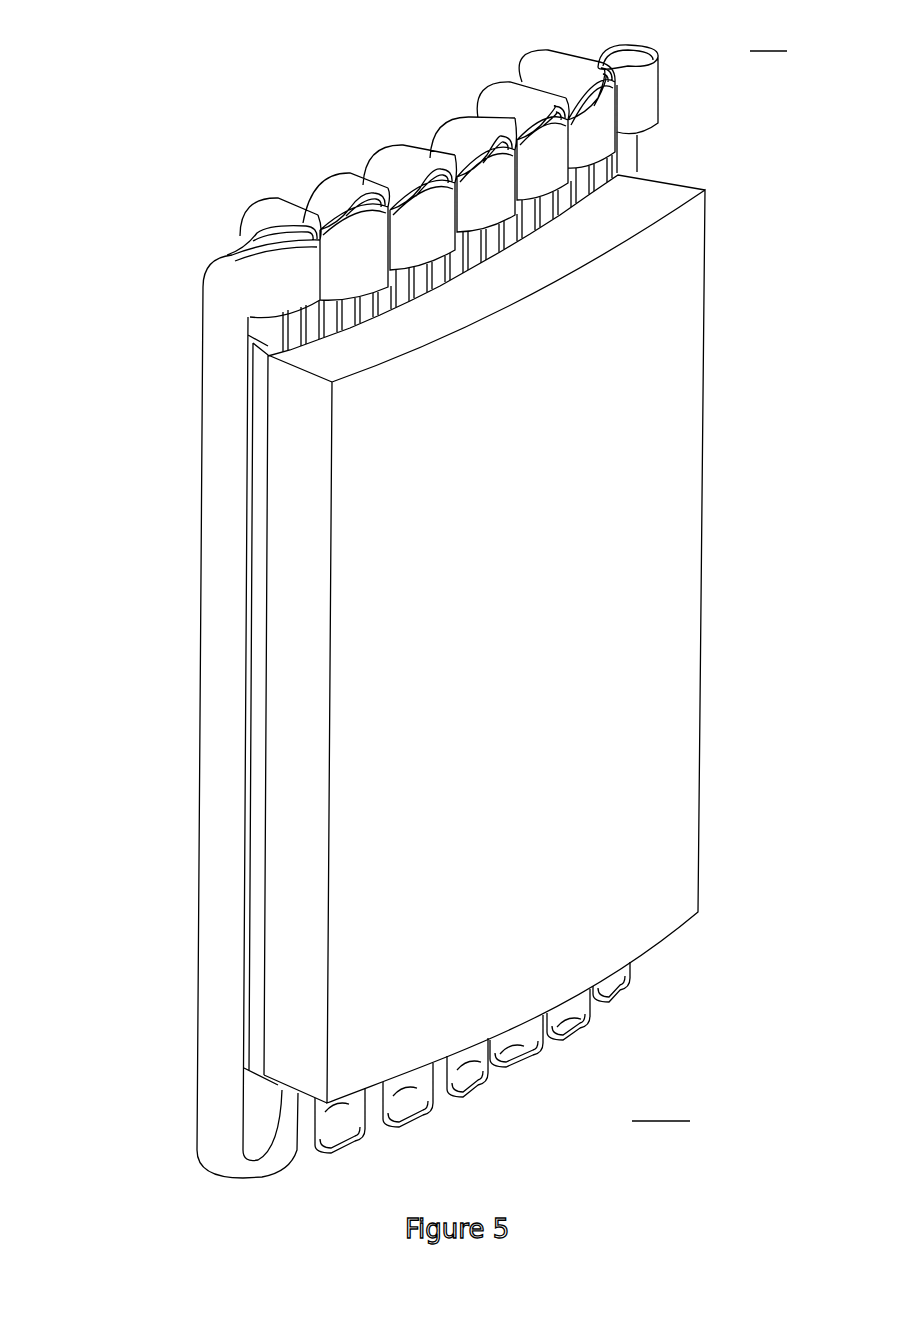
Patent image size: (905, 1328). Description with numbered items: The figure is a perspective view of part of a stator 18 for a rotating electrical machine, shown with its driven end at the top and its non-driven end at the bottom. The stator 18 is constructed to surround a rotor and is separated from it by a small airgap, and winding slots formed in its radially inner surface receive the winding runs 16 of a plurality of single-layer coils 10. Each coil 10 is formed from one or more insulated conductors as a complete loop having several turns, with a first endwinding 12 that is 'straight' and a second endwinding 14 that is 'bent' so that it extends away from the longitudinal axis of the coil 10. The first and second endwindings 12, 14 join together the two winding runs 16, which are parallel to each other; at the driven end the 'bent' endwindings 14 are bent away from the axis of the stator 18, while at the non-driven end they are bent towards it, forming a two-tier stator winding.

The coil 10 is at (170, 395).
The first endwinding 12 is at (392, 157).
The second endwinding 14 is at (260, 280).
The winding runs 16 is at (215, 655).
The stator 18 is at (667, 405).